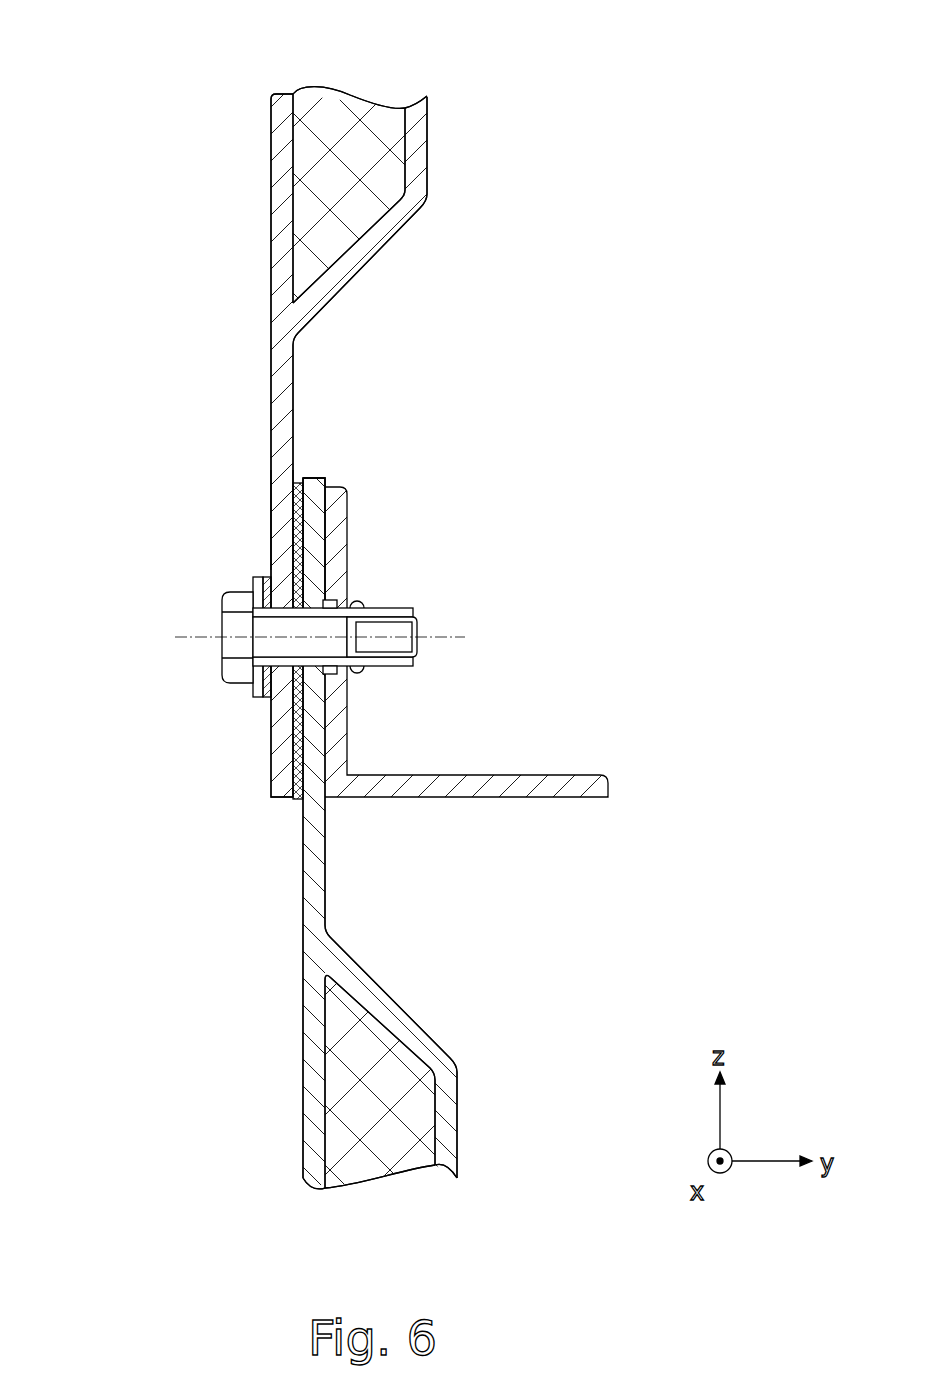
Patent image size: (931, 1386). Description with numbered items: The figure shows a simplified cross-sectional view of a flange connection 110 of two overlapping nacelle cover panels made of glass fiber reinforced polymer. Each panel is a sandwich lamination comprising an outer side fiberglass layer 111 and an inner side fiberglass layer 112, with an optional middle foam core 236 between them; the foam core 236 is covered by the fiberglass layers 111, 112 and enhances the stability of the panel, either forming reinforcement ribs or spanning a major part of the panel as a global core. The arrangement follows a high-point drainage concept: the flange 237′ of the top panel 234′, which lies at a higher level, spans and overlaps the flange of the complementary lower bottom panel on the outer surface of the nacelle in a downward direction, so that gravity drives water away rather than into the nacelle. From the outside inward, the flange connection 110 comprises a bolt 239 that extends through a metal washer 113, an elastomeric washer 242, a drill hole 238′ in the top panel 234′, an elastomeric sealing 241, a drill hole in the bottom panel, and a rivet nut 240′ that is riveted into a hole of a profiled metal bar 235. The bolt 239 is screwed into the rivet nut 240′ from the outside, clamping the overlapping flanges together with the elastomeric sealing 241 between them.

The flange connection 110 is at (141, 608).
The outer side fiberglass layer 111 is at (281, 144).
The inner side fiberglass layer 112 is at (418, 156).
The metal washer 113 is at (262, 690).
The top panel 234′ is at (208, 265).
The profiled metal bar 235 is at (352, 785).
The foam core 236 is at (350, 108).
The flange of the top panel 237′ is at (268, 520).
The drill hole in the outer/top panel 238′ is at (292, 668).
The bolt 239 is at (232, 672).
The rivet nut 240′ is at (392, 604).
The elastomeric sealing 241 is at (299, 482).
The elastomeric washer 242 is at (262, 580).